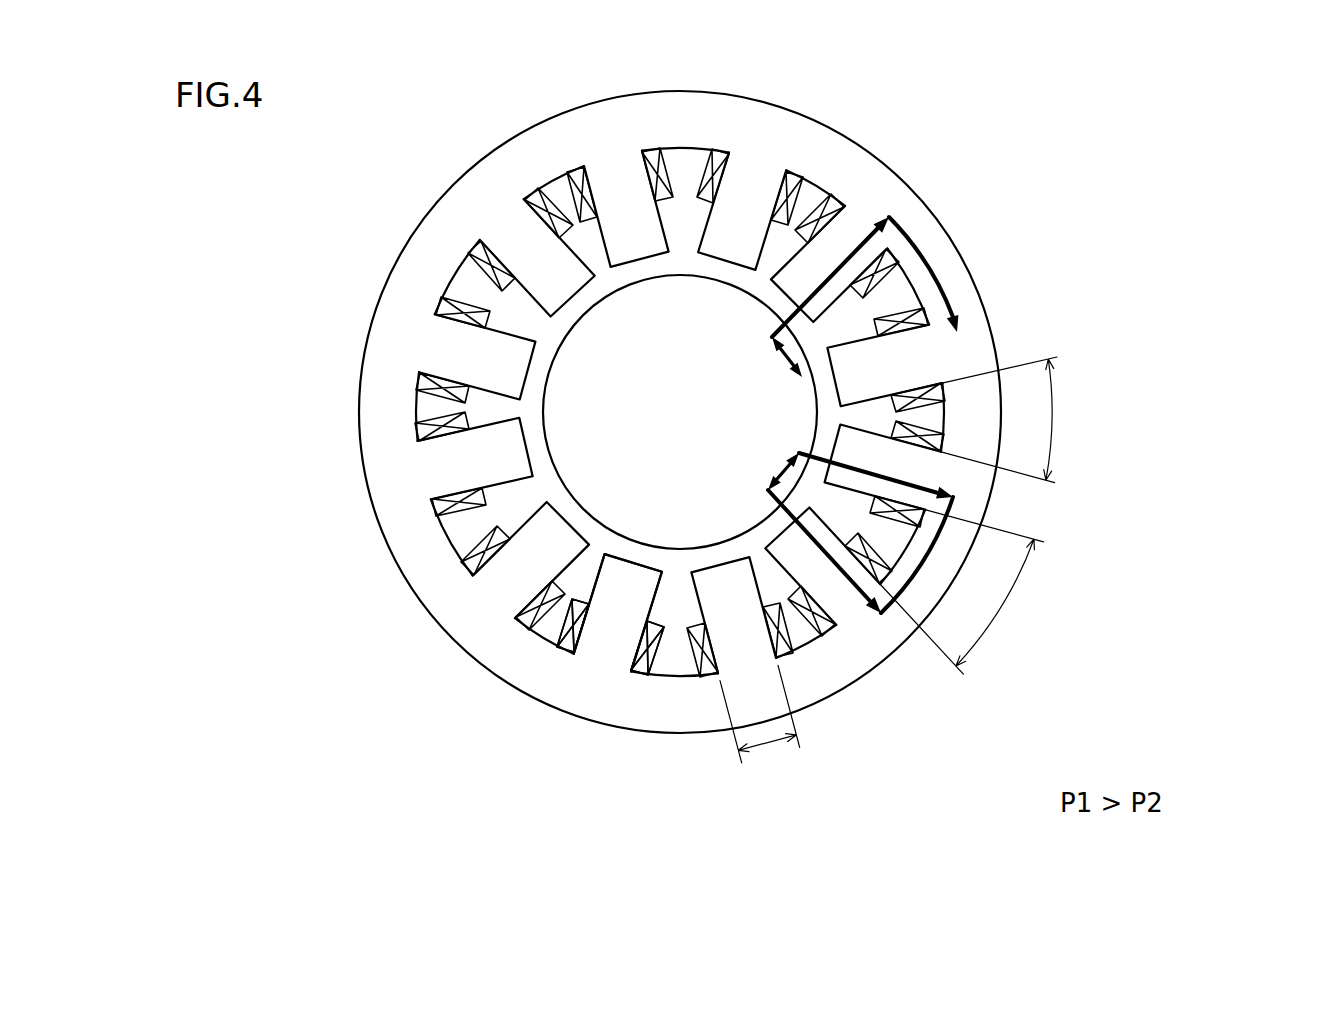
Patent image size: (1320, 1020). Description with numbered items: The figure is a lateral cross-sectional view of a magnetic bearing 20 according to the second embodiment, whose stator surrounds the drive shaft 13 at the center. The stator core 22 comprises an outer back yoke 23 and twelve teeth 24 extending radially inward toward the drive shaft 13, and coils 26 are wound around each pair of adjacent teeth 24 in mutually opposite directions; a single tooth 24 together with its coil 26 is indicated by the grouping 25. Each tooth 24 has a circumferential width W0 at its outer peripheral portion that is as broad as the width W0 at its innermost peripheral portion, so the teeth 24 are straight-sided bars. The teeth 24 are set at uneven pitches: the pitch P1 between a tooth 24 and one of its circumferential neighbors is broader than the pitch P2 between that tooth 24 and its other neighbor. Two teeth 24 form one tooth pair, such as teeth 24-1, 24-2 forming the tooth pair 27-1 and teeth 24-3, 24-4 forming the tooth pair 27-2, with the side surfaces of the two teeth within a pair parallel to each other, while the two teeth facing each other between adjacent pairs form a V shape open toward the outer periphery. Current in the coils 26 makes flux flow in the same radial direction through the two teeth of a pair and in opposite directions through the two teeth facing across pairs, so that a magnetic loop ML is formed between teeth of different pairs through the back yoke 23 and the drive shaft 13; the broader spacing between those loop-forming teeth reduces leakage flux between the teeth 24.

The drive shaft 13 is at (598, 433).
The magnetic bearing 20 is at (950, 127).
The stator core 22 is at (290, 272).
The back yoke 23 is at (400, 300).
The tooth 24 is at (483, 359).
The stator pole unit 25 is at (470, 725).
The coil 26 is at (572, 628).
The tooth 24-1 is at (845, 585).
The tooth 24-2 is at (907, 473).
The tooth 24-3 is at (903, 358).
The tooth 24-4 is at (847, 245).
The tooth pair 27-1 is at (1201, 548).
The tooth pair 27-2 is at (1105, 203).
The magnetic loop ML is at (785, 360).
The pitch P1 is at (962, 592).
The pitch P2 is at (1017, 420).
The circumferential width W0 is at (767, 743).